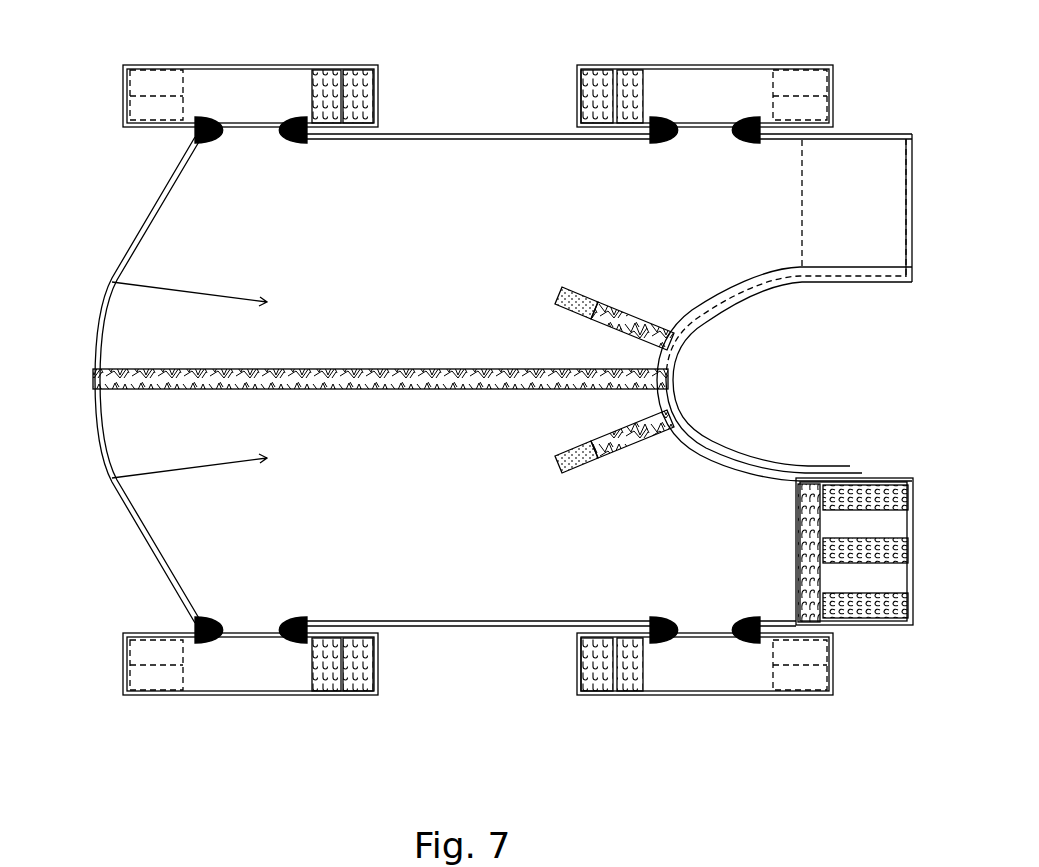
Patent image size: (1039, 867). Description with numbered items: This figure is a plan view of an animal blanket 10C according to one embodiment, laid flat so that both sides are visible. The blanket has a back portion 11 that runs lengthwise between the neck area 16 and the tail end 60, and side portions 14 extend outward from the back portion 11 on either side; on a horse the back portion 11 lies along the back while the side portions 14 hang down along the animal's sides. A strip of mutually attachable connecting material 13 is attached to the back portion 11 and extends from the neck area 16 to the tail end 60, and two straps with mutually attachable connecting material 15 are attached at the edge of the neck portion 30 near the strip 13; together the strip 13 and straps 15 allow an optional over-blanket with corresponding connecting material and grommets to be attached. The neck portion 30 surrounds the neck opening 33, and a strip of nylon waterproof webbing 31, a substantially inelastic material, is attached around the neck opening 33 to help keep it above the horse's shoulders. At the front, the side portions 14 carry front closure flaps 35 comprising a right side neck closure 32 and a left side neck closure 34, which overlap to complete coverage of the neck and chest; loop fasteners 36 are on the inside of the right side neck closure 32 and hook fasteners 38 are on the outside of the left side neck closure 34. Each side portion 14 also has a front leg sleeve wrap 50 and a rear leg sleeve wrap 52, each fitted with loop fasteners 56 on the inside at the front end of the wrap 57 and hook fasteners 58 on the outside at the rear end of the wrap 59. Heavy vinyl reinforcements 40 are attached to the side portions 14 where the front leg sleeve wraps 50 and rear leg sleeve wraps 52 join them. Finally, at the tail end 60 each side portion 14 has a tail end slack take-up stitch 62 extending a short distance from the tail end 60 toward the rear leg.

The blanket 10C is at (440, 130).
The back portion 11 is at (366, 358).
The strip of mutually attachable connecting material 13 is at (435, 371).
The side portions 14 is at (447, 235).
The straps with mutually attachable connecting material 15 is at (597, 292).
The neck area 16 is at (676, 295).
The neck portion 30 is at (745, 290).
The nylon waterproof webbing 31 is at (713, 305).
The right side neck closure 32 is at (872, 479).
The neck opening 33 is at (730, 382).
The left side neck closure 34 is at (873, 134).
The front closure flaps 35 is at (835, 153).
The loop fasteners 36 is at (912, 282).
The hook fasteners 38 is at (863, 610).
The heavy vinyl reinforcements 40 is at (212, 143).
The front leg sleeve wraps 50 is at (693, 110).
The rear leg sleeve wraps 52 is at (241, 106).
The loop fasteners 56 is at (183, 83).
The front end of the wrap 57 is at (353, 63).
The hook fasteners 58 is at (310, 77).
The rear end of the wrap 59 is at (137, 63).
The tail end 60 is at (99, 297).
The tail end slack take-up stitch 62 is at (198, 292).